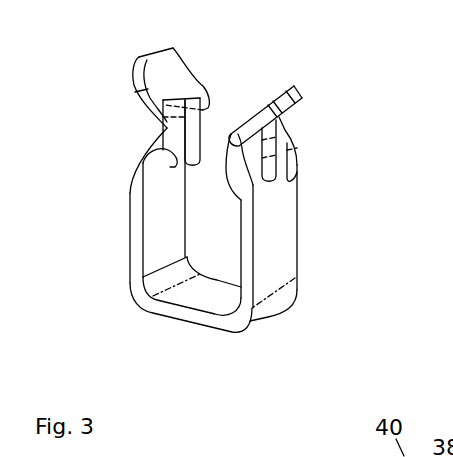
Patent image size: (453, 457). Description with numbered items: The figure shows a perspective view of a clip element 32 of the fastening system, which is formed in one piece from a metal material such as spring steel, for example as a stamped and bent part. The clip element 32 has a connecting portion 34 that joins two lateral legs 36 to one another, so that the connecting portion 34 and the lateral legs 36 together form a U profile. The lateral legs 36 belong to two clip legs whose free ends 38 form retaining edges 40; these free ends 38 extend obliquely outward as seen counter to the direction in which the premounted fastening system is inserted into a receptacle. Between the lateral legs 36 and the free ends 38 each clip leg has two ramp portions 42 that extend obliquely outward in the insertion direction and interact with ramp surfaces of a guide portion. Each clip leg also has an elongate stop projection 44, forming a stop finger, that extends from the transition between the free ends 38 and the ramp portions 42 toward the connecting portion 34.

The clip element 32 is at (255, 191).
The connecting portion 34 is at (192, 314).
The lateral legs 36 is at (137, 243).
The free ends 38 is at (177, 77).
The retaining edges 40 is at (155, 48).
The ramp portions 42 is at (153, 175).
The stop projection 44 is at (193, 140).